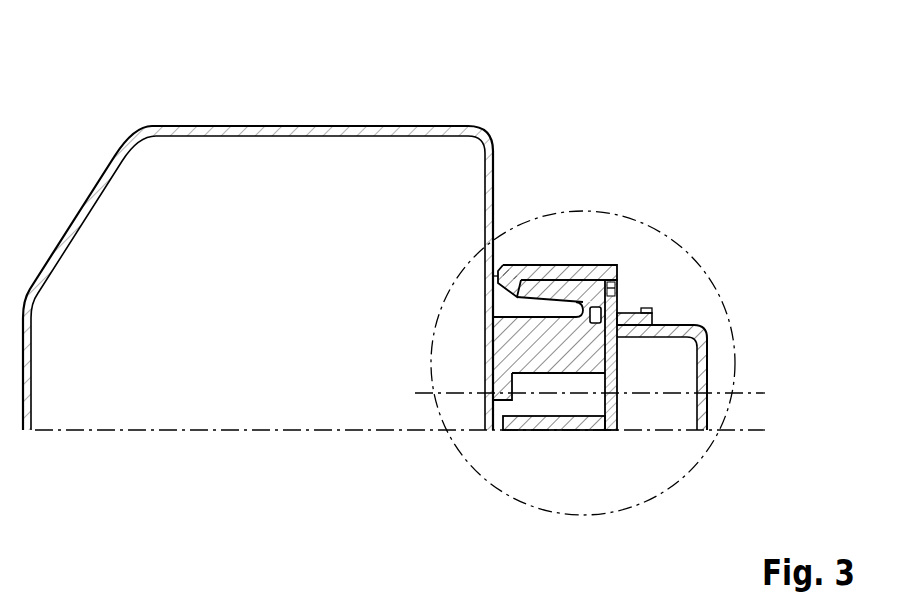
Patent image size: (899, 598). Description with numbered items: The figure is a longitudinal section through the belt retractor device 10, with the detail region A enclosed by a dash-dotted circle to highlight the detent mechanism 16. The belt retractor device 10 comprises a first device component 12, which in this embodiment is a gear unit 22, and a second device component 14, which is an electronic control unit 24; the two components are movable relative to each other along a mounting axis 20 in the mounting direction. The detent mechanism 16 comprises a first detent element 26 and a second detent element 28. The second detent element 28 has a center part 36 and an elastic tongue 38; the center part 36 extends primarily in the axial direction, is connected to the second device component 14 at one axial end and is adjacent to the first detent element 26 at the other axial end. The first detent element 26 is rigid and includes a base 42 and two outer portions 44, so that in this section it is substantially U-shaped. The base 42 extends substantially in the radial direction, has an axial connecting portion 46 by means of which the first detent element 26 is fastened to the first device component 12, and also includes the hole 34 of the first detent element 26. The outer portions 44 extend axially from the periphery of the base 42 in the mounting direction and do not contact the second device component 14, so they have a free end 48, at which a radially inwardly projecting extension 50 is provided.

The belt retractor device 10 is at (648, 87).
The first device component 12 is at (726, 367).
The gear unit 22 is at (709, 340).
The second device component 14 is at (258, 234).
The electronic control unit 24 is at (212, 126).
The detent mechanism 16 is at (706, 234).
The mounting axis 20 is at (753, 395).
The first detent element 26 is at (650, 292).
The second detent element 28 is at (474, 351).
The hole 34 is at (613, 266).
The center part 36 is at (520, 356).
The elastic tongue 38 is at (530, 301).
The base 42 is at (617, 373).
The outer portions 44 is at (563, 271).
The connecting portion 46 is at (653, 313).
The free end 48 is at (517, 251).
The extension 50 is at (502, 277).
The detail region A is at (608, 212).